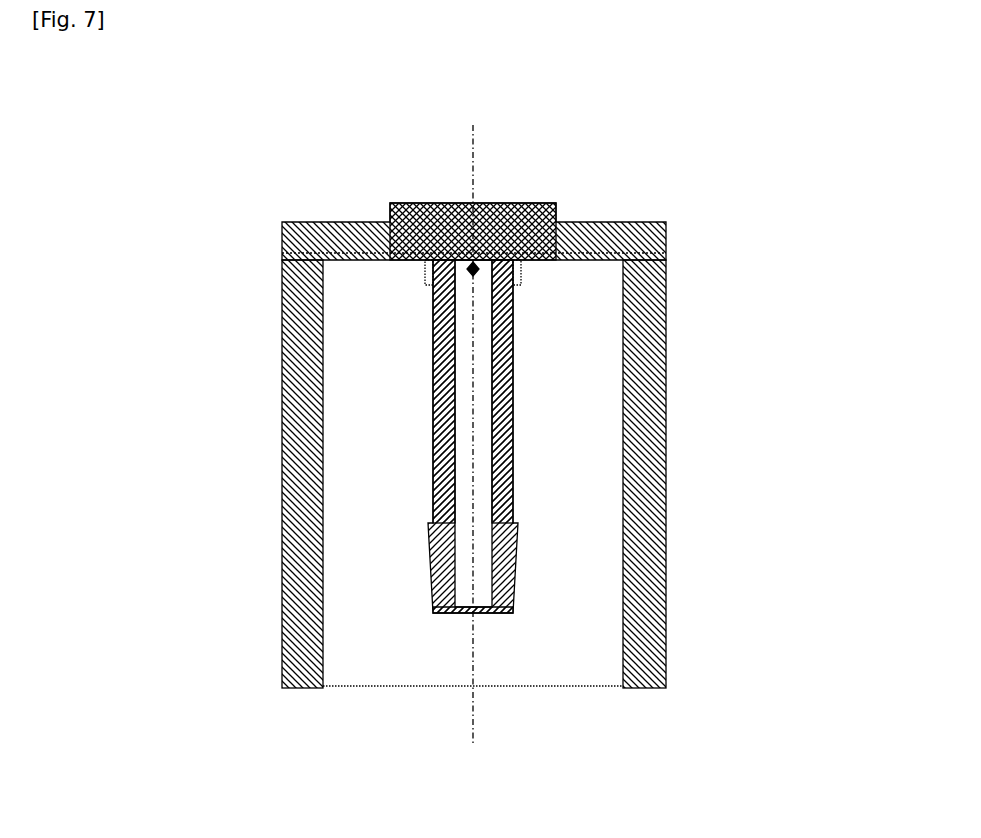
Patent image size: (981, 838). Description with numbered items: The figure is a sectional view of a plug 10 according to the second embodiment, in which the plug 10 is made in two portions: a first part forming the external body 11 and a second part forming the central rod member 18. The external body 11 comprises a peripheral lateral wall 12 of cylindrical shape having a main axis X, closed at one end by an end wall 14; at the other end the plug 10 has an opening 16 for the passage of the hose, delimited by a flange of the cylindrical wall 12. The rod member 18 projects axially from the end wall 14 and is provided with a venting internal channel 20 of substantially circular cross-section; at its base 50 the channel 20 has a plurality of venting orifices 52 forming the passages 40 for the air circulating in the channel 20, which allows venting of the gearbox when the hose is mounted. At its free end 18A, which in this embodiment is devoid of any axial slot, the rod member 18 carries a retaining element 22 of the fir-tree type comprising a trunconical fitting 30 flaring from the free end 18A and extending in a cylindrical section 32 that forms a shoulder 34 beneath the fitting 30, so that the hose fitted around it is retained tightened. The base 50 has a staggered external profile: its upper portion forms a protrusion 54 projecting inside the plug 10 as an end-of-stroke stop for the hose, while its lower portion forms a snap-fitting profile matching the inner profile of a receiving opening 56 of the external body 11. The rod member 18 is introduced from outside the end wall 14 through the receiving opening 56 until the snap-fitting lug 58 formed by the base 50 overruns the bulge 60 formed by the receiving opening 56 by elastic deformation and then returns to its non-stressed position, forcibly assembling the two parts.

The plug 10 is at (143, 212).
The external body 11 is at (666, 422).
The peripheral lateral wall 12 is at (282, 357).
The end wall 14 is at (355, 222).
The opening 16 is at (583, 688).
The central rod member 18 is at (430, 410).
The free end 18A is at (453, 615).
The venting internal channel 20 is at (432, 477).
The retaining element 22 is at (425, 590).
The trunconical fitting 30 is at (623, 592).
The cylindrical section 32 is at (623, 483).
The shoulder 34 is at (428, 523).
The passages 40 is at (428, 284).
The base 50 is at (432, 203).
The venting orifice 52 is at (427, 277).
The protrusion 54 is at (623, 325).
The receiving opening 56 is at (580, 222).
The lug 58 is at (666, 253).
The bulge 60 is at (282, 222).
The main axis X is at (473, 127).